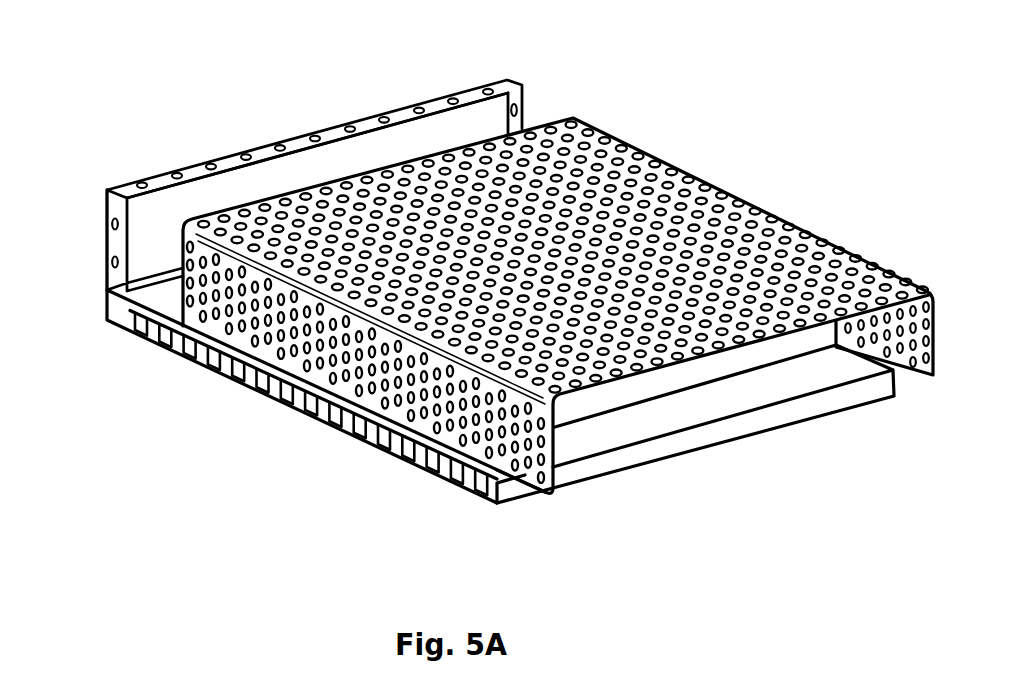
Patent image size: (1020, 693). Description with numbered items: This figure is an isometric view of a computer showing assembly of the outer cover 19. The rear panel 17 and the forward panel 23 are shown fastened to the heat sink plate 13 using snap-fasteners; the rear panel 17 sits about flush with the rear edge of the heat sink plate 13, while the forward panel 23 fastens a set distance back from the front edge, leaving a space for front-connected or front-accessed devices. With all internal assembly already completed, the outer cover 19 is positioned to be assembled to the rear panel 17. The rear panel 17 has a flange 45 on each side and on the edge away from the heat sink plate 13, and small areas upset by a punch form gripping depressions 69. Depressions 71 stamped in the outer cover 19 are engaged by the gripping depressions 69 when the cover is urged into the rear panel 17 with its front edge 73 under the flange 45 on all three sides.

The heat sink plate 13 is at (238, 378).
The rear panel 17 is at (113, 210).
The outer cover 19 is at (614, 134).
The forward panel 23 is at (790, 346).
The flange 45 is at (105, 268).
The gripping depressions 69 is at (111, 262).
The depressions 71 is at (237, 207).
The front edge 73 is at (428, 140).